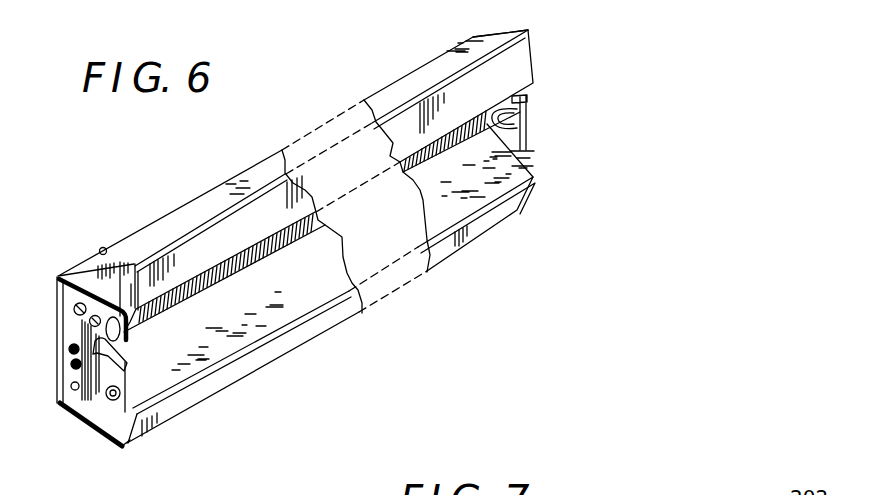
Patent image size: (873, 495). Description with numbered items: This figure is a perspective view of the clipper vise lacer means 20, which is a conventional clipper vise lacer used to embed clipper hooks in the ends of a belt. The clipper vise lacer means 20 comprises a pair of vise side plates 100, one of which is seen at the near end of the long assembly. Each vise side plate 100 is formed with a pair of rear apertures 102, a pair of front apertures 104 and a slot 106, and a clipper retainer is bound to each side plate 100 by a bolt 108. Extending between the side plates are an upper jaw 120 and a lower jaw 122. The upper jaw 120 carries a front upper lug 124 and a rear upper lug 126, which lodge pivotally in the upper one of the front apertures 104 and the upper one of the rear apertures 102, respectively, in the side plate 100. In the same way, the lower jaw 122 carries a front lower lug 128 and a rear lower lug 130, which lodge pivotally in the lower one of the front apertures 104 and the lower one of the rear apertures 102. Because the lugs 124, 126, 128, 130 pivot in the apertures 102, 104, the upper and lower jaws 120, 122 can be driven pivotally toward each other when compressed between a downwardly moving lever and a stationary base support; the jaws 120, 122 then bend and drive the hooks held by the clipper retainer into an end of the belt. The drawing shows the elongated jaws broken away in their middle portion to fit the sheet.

The clipper vise lacer means 20 is at (599, 128).
The vise side plate 100 is at (125, 350).
The rear aperture 102 is at (72, 300).
The front aperture 104 is at (136, 266).
The slot 106 is at (173, 284).
The bolt 108 is at (73, 362).
The upper jaw 120 is at (428, 72).
The lower jaw 122 is at (488, 170).
The front upper lug 124 is at (100, 250).
The rear upper lug 126 is at (77, 313).
The front lower lug 128 is at (118, 422).
The rear lower lug 130 is at (75, 376).